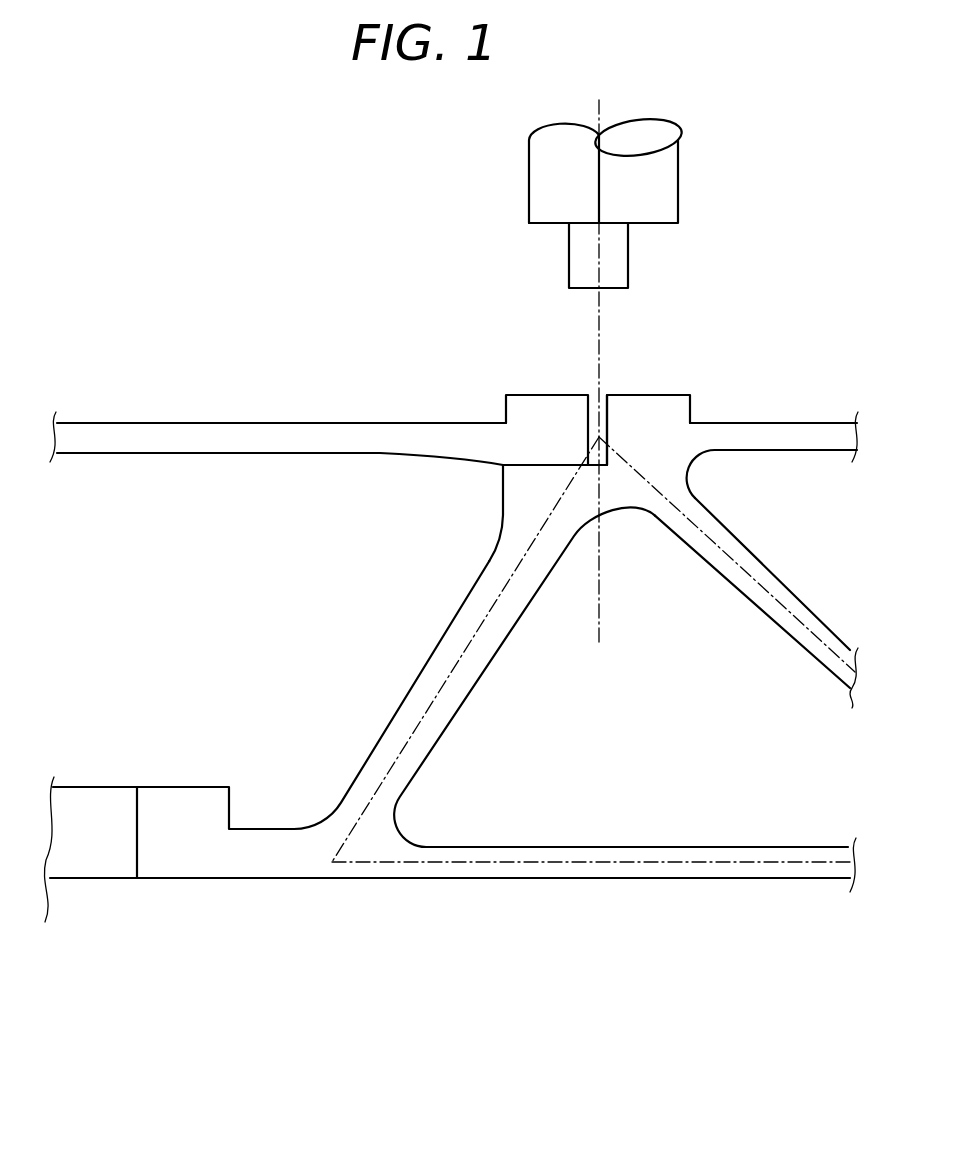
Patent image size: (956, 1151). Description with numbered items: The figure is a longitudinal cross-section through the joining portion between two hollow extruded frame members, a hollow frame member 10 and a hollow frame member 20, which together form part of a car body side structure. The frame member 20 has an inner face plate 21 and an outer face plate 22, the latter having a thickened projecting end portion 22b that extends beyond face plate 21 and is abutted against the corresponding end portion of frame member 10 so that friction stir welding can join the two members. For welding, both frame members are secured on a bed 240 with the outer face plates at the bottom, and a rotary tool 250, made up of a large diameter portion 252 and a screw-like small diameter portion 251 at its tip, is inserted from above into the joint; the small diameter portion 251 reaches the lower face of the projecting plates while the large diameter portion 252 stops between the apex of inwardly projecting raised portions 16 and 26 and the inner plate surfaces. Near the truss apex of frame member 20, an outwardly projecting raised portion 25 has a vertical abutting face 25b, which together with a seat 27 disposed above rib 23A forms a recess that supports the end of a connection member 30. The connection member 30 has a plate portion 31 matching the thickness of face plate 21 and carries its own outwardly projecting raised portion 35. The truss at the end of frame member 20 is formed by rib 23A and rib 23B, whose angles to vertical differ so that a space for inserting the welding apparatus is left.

The hollow extruded frame member 10 is at (169, 867).
The raised portion 16 is at (100, 797).
The hollow extruded frame member 20 is at (456, 669).
The face plate 21 is at (815, 437).
The face plate 22 is at (453, 895).
The projecting end portion of face plate 22b is at (263, 865).
The rib 23A is at (452, 632).
The rib 23B is at (781, 631).
The bed 240 is at (348, 948).
The raised portion 25 is at (661, 404).
The abutting face 25b is at (611, 410).
The raised portion 26 is at (187, 797).
The seat 27 is at (522, 500).
The connection member 30 is at (319, 384).
The plate portion 31 is at (195, 428).
The raised portion 35 is at (538, 407).
The rotary tool 250 is at (609, 371).
The small diameter portion 251 is at (628, 262).
The large diameter portion 252 is at (678, 178).